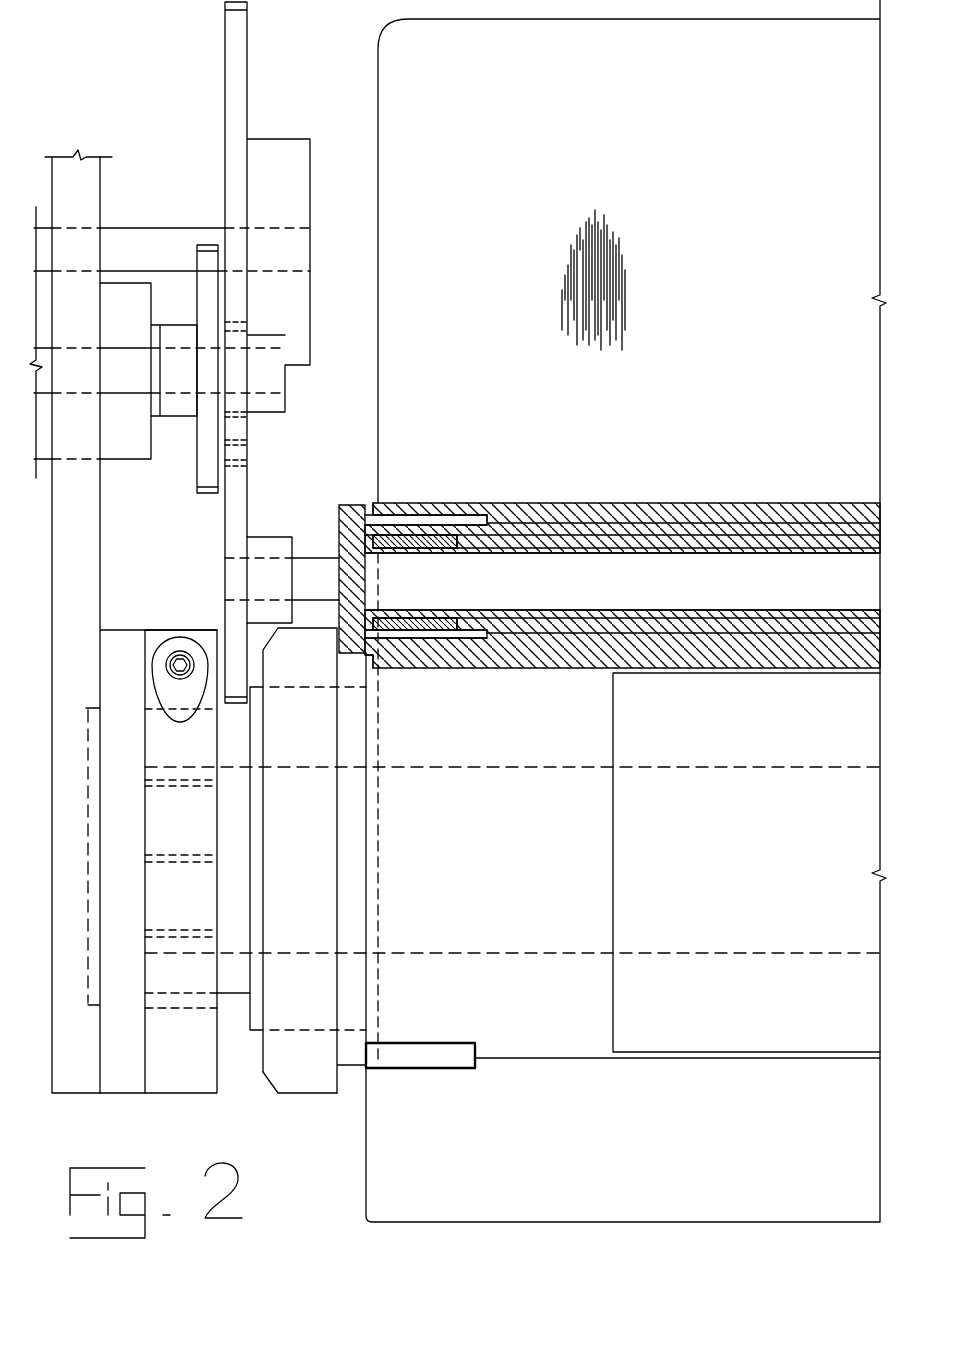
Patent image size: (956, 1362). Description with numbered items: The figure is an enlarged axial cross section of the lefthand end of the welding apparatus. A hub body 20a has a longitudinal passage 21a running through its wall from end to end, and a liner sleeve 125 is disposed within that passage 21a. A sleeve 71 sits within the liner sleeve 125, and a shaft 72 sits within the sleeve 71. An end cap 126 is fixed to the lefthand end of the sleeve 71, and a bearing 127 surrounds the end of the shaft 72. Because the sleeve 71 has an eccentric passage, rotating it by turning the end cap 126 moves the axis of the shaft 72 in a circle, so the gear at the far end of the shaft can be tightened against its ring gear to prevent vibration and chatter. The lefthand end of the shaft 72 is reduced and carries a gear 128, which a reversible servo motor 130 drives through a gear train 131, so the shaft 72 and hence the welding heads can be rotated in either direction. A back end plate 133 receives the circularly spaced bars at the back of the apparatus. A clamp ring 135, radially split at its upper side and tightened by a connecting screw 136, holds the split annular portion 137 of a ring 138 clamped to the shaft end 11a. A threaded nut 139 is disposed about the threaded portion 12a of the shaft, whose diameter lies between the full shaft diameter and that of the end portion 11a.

The shaft end 11a is at (228, 996).
The threaded portion of shaft 12a is at (298, 1035).
The hub body 20a is at (598, 503).
The longitudinal passage 21a is at (520, 523).
The sleeve 71 is at (596, 617).
The shaft 72 is at (540, 593).
The liner sleeve 125 is at (680, 530).
The end cap 126 is at (339, 517).
The bearing 127 is at (425, 518).
The gear 128 is at (247, 515).
The servo motor 130 is at (124, 460).
The gear train 131 is at (278, 112).
The back end plate 133 is at (100, 567).
The clamp ring 135 is at (157, 1095).
The connecting screw 136 is at (179, 652).
The split annular portion 137 is at (180, 1010).
The ring 138 is at (118, 1095).
The threaded nut 139 is at (288, 1095).